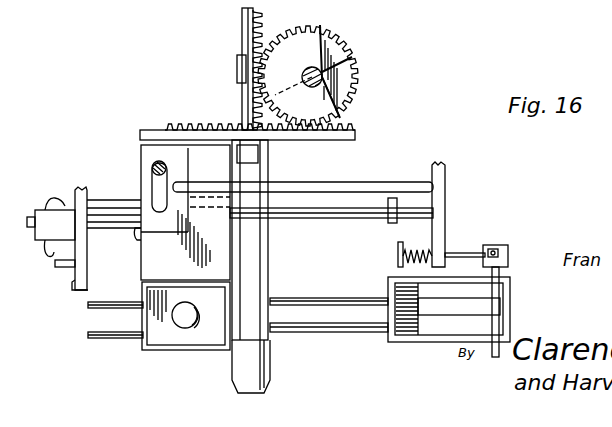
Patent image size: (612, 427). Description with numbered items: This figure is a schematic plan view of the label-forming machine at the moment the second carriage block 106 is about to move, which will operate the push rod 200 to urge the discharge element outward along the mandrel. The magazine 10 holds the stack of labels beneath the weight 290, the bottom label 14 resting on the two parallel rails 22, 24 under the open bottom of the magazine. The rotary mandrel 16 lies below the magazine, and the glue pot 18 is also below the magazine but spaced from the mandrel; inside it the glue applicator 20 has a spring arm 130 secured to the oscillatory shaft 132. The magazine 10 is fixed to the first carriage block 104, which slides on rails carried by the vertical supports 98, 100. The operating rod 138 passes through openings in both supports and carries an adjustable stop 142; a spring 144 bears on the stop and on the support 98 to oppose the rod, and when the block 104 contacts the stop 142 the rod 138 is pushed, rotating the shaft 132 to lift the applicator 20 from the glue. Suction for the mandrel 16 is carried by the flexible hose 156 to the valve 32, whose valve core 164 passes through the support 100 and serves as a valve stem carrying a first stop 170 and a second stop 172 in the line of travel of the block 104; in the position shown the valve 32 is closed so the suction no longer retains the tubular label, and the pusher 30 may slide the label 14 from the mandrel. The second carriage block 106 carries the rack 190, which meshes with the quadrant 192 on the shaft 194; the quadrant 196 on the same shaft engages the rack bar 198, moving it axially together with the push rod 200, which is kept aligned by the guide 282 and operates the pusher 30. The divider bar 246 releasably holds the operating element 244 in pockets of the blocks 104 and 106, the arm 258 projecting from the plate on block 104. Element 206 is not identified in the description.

The magazine 10 is at (180, 361).
The label 14 is at (262, 315).
The rotary mandrel 16 is at (268, 376).
The glue pot 18 is at (436, 342).
The glue applicator 20 is at (396, 321).
The rail 22 is at (317, 333).
The rail 24 is at (334, 299).
The pusher 30 is at (291, 279).
The valve 32 is at (45, 220).
The vertical support 98 is at (440, 190).
The vertical support 100 is at (87, 247).
The first carriage block 104 is at (224, 244).
The second carriage block 106 is at (206, 131).
The spring arm 130 is at (427, 303).
The oscillatory shaft 132 is at (500, 292).
The operating rod 138 is at (465, 253).
The stop 142 is at (398, 250).
The spring 144 is at (415, 250).
The flexible hose 156 is at (127, 207).
The valve core 164 is at (332, 212).
The first stop 170 is at (388, 200).
The second stop 172 is at (154, 242).
The rack 190 is at (348, 133).
The quadrant 192 is at (333, 92).
The shaft 194 is at (308, 68).
The quadrant 196 is at (350, 59).
The rack bar 198 is at (263, 28).
The push rod 200 is at (242, 22).
The rod 206 is at (302, 288).
The operating element 244 is at (167, 170).
The divider bar 246 is at (374, 182).
The arm 258 is at (150, 185).
The guide 282 is at (223, 67).
The weight 290 is at (212, 336).